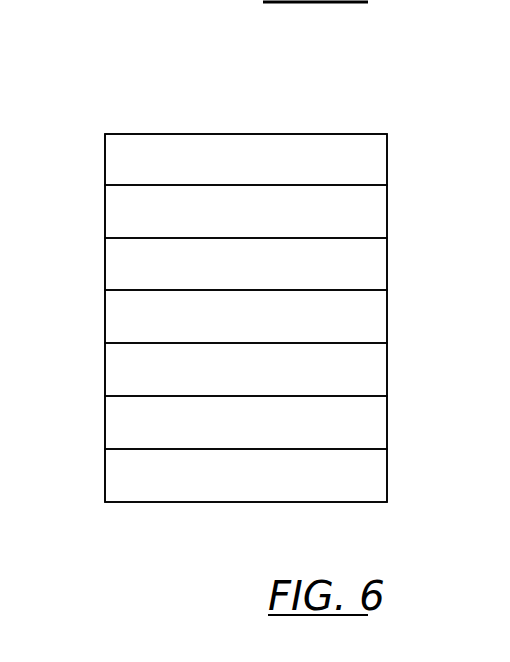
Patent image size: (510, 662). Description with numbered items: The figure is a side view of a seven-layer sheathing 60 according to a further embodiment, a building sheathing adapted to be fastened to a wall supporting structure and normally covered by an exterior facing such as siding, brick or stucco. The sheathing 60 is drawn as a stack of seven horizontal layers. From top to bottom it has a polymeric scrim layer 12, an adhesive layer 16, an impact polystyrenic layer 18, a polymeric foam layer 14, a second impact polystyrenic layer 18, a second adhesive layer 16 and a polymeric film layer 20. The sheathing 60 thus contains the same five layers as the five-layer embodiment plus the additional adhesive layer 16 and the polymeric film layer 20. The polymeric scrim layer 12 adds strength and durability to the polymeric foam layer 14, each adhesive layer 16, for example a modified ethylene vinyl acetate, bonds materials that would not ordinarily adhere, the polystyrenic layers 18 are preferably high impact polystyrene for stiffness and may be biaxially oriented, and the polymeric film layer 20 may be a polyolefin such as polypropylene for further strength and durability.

The sheathing 60 is at (125, 67).
The polymeric scrim layer 12 is at (105, 151).
The adhesive layer 16 is at (105, 204).
The impact polystyrenic layer 18 is at (105, 256).
The polymeric foam layer 14 is at (105, 309).
The polymeric film layer 20 is at (105, 468).